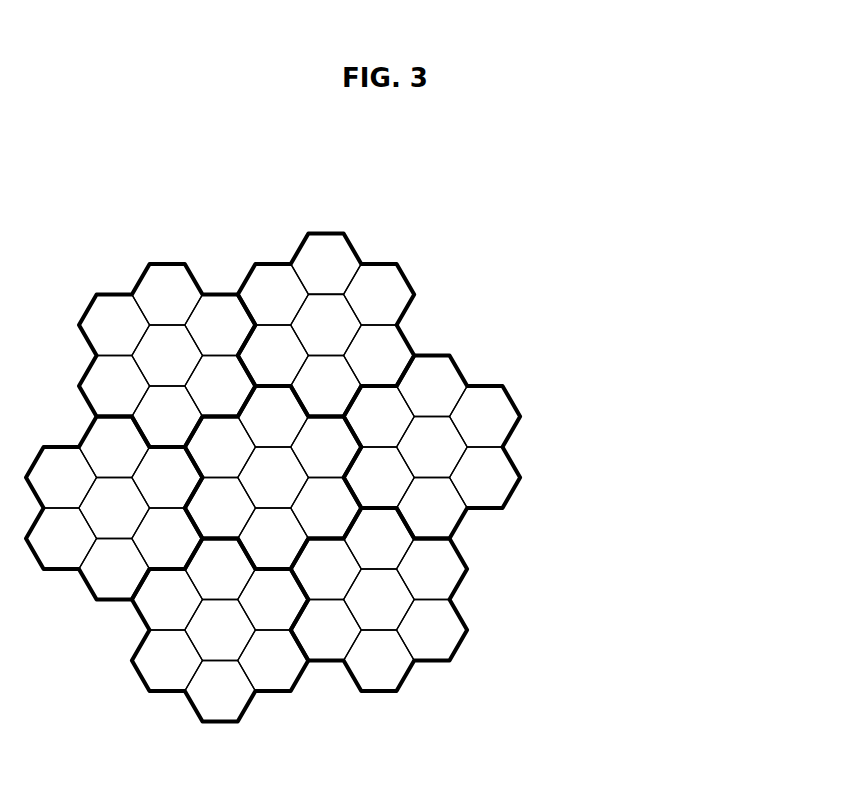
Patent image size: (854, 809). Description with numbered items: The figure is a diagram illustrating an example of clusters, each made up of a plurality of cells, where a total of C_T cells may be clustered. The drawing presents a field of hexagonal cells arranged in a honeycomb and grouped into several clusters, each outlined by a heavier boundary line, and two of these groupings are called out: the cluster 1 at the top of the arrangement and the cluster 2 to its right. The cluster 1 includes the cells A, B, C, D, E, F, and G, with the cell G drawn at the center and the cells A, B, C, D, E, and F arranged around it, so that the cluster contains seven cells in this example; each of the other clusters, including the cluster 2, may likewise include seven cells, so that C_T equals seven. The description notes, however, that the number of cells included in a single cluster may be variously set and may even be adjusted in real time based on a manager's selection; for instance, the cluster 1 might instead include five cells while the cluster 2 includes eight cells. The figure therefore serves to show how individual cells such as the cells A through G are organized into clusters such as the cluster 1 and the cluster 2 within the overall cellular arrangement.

The cluster 1 is at (326, 272).
The cluster 2 is at (508, 400).
The cell A is at (326, 263).
The cell B is at (273, 294).
The cell C is at (273, 355).
The cell D is at (326, 386).
The cell E is at (379, 355).
The cell F is at (379, 294).
The cell G is at (326, 325).